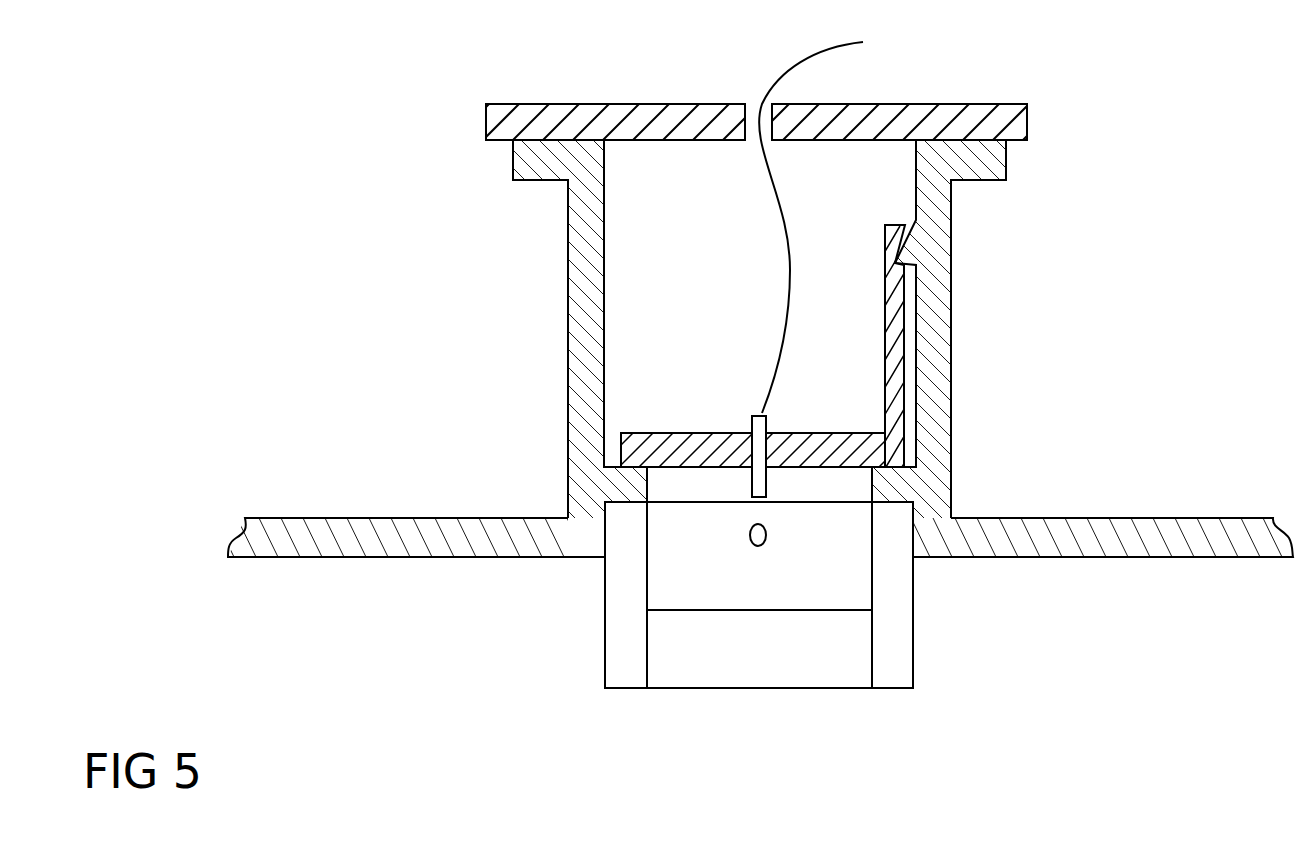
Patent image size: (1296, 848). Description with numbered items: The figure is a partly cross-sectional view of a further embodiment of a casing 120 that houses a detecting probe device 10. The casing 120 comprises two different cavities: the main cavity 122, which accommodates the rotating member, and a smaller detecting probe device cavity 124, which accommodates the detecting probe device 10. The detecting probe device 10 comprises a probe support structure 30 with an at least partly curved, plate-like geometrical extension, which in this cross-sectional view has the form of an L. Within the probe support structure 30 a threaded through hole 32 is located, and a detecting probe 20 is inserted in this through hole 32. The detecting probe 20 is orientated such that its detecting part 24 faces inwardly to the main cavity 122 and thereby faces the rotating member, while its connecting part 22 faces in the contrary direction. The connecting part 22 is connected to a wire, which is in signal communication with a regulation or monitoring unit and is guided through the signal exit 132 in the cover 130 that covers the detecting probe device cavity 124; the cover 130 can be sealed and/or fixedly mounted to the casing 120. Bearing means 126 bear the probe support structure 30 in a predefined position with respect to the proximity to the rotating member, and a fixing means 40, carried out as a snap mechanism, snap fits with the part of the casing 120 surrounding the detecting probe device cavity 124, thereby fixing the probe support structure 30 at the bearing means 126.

The detecting probe device 10 is at (804, 248).
The detecting probe 20 is at (757, 427).
The connecting part 22 is at (767, 410).
The detecting part 24 is at (753, 492).
The probe support structure 30 is at (624, 432).
The through hole 32 is at (768, 457).
The fixing means 40 is at (878, 245).
The casing 120 is at (1145, 520).
The main cavity 122 is at (460, 617).
The detecting probe device cavity 124 is at (648, 293).
The bearing means 126 is at (627, 527).
The cover 130 is at (558, 118).
The signal exit 132 is at (743, 122).